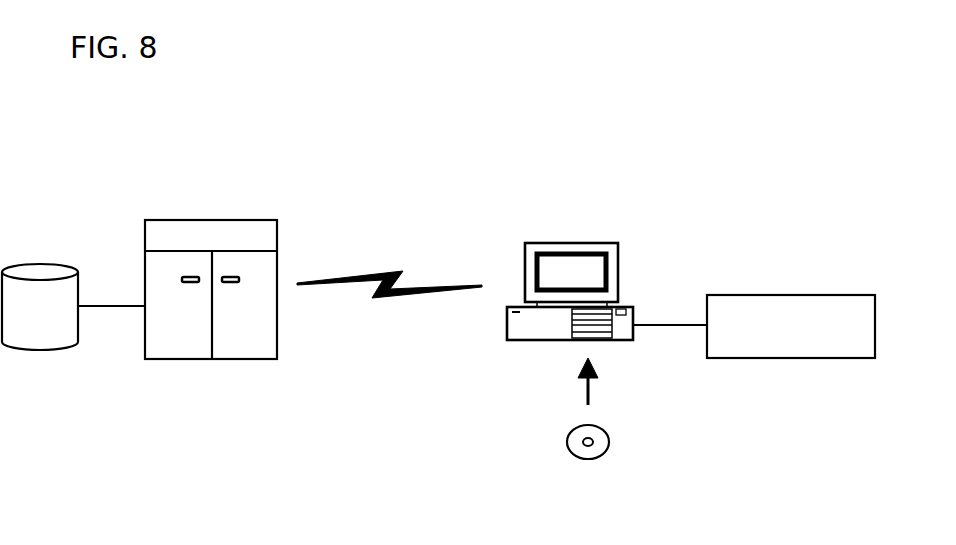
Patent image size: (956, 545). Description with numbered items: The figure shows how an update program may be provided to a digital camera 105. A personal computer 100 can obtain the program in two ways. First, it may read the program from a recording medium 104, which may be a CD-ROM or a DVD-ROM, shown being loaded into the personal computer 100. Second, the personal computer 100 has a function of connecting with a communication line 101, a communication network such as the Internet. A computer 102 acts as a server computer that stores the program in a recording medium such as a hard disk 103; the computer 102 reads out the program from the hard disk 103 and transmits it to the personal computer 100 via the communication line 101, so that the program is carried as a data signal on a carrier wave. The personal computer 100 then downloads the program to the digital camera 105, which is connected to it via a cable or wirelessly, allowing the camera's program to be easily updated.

The personal computer 100 is at (572, 243).
The communication line 101 is at (402, 241).
The computer 102 is at (213, 220).
The hard disk 103 is at (40, 262).
The recording medium 104 is at (570, 458).
The digital camera 105 is at (790, 295).